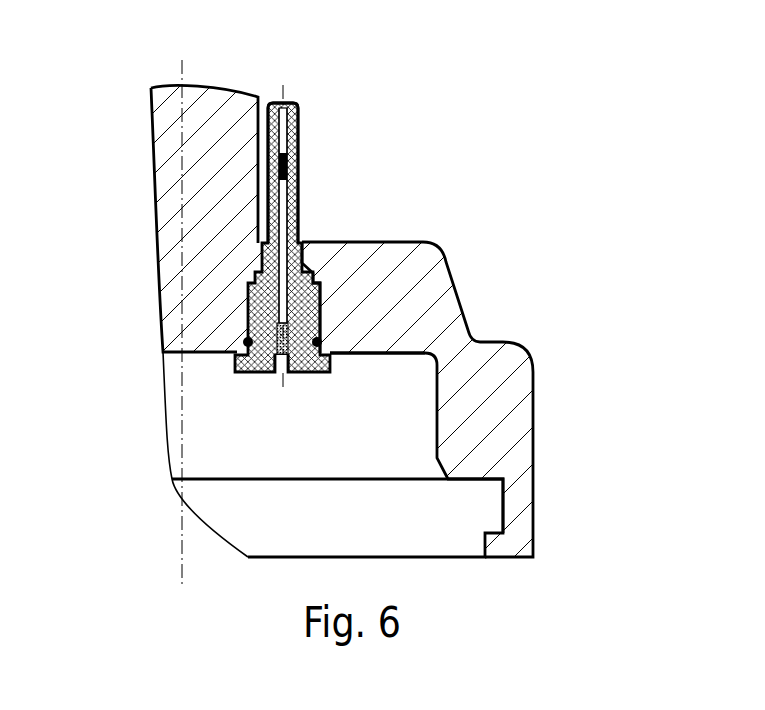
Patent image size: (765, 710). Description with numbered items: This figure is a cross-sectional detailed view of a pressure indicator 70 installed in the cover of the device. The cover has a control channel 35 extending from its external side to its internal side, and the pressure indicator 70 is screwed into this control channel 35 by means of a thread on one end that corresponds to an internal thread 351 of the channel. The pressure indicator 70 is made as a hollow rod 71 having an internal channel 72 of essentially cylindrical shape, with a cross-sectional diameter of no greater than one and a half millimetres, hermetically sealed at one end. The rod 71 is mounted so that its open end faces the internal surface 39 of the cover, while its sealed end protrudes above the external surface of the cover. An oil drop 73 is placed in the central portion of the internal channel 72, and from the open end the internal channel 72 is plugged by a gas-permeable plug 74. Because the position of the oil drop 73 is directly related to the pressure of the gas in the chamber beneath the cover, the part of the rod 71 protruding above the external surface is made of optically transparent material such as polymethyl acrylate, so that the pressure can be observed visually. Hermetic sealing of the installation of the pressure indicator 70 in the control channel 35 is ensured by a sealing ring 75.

The control channel 35 is at (315, 272).
The internal thread 351 is at (320, 306).
The internal surface 39 is at (358, 355).
The pressure indicator 70 is at (362, 192).
The hollow rod 71 is at (300, 200).
The internal channel 72 is at (300, 168).
The oil drop 73 is at (298, 133).
The gas-permeable plug 74 is at (320, 340).
The sealing ring 75 is at (246, 342).